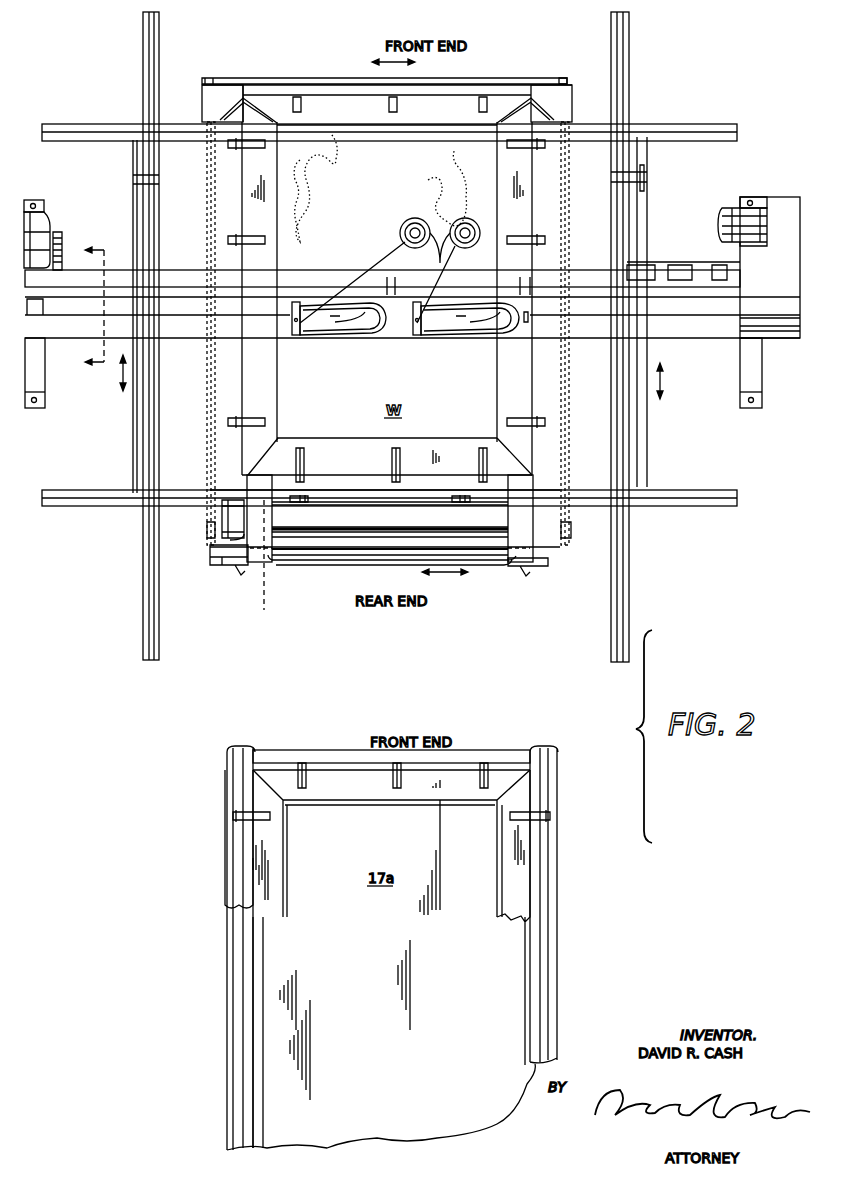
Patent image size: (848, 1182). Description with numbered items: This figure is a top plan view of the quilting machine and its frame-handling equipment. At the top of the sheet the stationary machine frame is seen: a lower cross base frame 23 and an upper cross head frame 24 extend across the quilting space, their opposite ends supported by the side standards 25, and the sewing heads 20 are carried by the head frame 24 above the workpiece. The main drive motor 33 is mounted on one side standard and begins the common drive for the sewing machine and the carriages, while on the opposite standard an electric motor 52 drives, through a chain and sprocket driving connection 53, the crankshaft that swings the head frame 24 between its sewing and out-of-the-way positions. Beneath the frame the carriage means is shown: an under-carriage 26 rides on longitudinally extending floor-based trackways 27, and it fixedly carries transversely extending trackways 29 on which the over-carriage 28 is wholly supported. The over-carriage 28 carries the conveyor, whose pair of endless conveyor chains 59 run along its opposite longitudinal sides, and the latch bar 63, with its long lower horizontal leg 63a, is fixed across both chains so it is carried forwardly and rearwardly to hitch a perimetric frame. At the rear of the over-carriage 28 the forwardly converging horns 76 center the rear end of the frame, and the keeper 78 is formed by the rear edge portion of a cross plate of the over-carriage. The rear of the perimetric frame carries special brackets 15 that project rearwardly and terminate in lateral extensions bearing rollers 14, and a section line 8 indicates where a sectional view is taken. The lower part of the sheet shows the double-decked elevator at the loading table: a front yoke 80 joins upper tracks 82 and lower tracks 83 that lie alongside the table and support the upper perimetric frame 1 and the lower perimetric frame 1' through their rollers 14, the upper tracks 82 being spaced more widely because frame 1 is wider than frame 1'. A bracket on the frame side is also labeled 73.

The upper perimetric frame 1 is at (416, 950).
The lower perimetric frame 1' is at (388, 296).
The section line 8- 8 is at (88, 307).
The rollers 14 is at (546, 813).
The special brackets 15 is at (248, 600).
The sewing head 20 is at (326, 333).
The lower cross base frame 23 is at (175, 334).
The upper cross head frame 24 is at (192, 270).
The side standards 25 is at (39, 365).
The under-carriage 26 is at (646, 435).
The trackways 27 is at (159, 586).
The over-carriage 28 is at (406, 568).
The trackways 29 is at (55, 506).
The main drive motor 33 is at (718, 210).
The electric motor 52 is at (42, 220).
The chain and sprocket driving connection 53 is at (62, 250).
The endless conveyor chains 59 is at (208, 517).
The latch bar 63 is at (189, 109).
The lower horizontal leg 63a is at (558, 104).
The front rail 73 is at (228, 100).
The horns 76 is at (242, 570).
The keeper 78 is at (318, 568).
The front yoke 80 is at (280, 759).
The upper tracks 82 is at (556, 917).
The lower tracks 83 is at (546, 946).